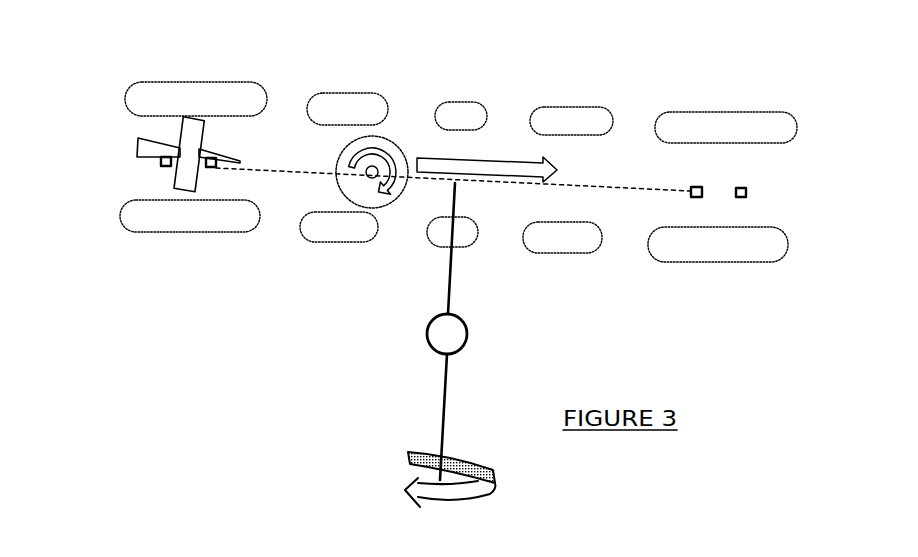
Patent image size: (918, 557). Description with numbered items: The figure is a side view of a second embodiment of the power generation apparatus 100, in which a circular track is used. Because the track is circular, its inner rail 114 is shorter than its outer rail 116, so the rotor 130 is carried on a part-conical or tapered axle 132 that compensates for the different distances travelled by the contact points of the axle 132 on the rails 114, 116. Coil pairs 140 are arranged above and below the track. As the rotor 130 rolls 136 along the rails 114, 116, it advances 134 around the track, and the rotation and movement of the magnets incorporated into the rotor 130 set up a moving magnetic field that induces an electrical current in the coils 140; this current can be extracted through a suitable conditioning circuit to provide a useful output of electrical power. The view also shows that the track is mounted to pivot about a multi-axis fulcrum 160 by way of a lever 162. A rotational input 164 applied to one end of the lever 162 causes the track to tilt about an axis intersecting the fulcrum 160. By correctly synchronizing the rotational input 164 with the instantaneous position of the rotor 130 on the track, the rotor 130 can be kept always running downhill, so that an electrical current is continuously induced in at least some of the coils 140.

The power generation apparatus 100 is at (119, 63).
The inner rail 114 is at (215, 168).
The outer rail 116 is at (160, 161).
The rotor 130 is at (346, 182).
The axle 132 is at (200, 152).
The advance 134 is at (499, 166).
The rolling 136 is at (409, 97).
The coil pairs 140 is at (458, 156).
The multi-axis fulcrum 160 is at (452, 330).
The lever 162 is at (452, 280).
The rotational input 164 is at (450, 495).